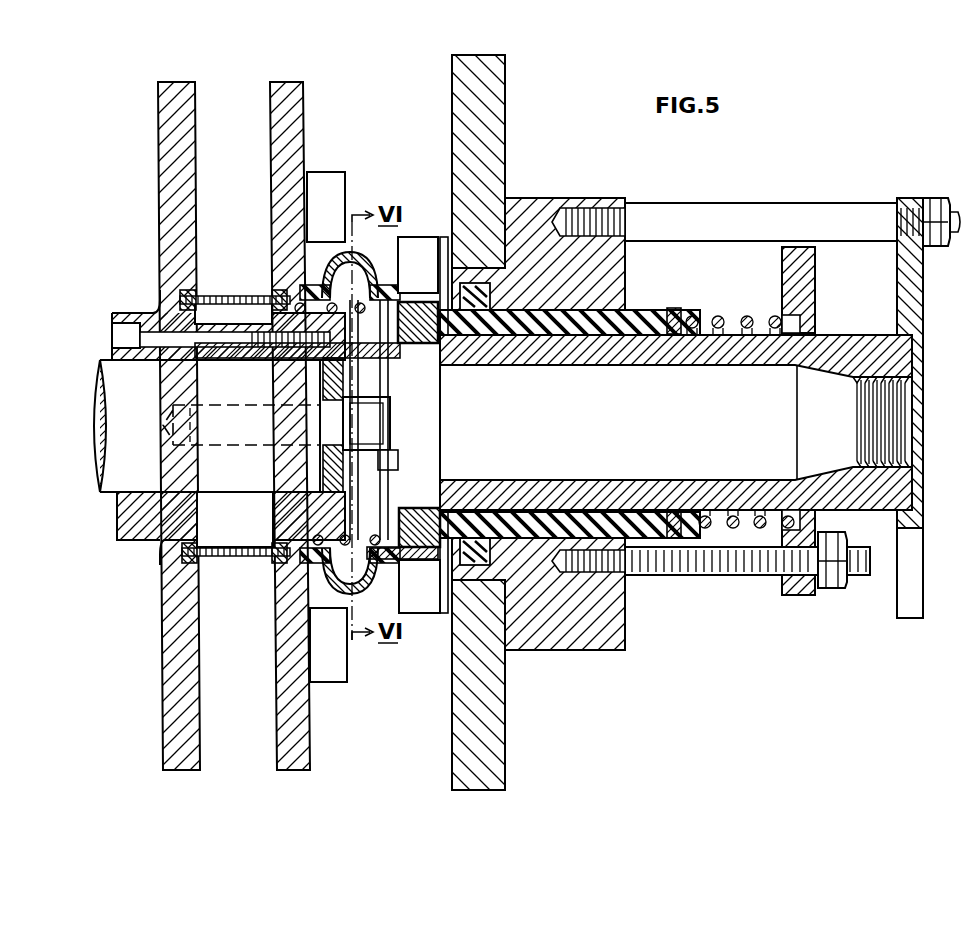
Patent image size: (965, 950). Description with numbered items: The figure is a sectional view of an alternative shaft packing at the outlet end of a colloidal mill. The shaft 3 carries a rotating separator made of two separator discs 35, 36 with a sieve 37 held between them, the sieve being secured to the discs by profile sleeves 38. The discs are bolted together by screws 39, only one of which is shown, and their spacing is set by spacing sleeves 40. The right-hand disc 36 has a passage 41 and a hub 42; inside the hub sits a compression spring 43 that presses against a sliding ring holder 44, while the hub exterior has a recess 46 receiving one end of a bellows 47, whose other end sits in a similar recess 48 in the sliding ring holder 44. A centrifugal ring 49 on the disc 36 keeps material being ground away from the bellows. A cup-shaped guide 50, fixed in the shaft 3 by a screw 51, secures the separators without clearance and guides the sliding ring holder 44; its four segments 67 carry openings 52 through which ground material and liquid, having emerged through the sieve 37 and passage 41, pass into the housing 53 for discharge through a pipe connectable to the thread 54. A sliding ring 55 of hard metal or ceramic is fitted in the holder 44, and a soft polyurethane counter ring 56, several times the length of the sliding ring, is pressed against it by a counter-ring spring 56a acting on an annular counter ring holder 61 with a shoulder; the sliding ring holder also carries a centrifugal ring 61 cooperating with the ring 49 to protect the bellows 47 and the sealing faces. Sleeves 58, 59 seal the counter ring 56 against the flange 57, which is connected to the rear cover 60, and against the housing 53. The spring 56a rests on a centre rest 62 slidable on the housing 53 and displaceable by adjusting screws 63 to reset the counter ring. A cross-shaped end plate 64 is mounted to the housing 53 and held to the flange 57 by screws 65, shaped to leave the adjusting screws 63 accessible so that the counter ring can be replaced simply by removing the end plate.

The shaft 3 is at (132, 460).
The separator disc 35 is at (172, 120).
The separator disc 36 is at (285, 99).
The sieve 37 is at (230, 285).
The profile sleeves 38 is at (273, 292).
The screws 39 is at (176, 340).
The spacing sleeves 40 is at (230, 350).
The passage 41 is at (275, 516).
The hub 42 is at (312, 360).
The compression spring 43 is at (305, 566).
The sliding ring holder 44 is at (392, 352).
The recess 46 is at (322, 580).
The bellows 47 is at (348, 262).
The recess 48 is at (376, 290).
The centrifugal ring 49 is at (326, 180).
The cup-shaped guide 50 is at (325, 465).
The screw 51 is at (325, 425).
The openings 52 is at (385, 458).
The housing 53 is at (640, 346).
The thread 54 is at (866, 396).
The sliding ring 55 is at (422, 509).
The counter ring 56 is at (604, 338).
The counter-ring spring 56a is at (719, 318).
The flange 57 is at (602, 652).
The sleeve 58 is at (488, 348).
The sleeve 59 is at (478, 500).
The rear cover 60 is at (480, 122).
The counter ring holder 61 is at (420, 600).
The centre rest 62 is at (797, 292).
The adjusting screws 63 is at (742, 566).
The end plate 64 is at (912, 300).
The screws 65 is at (748, 230).
The segments 67 is at (380, 436).